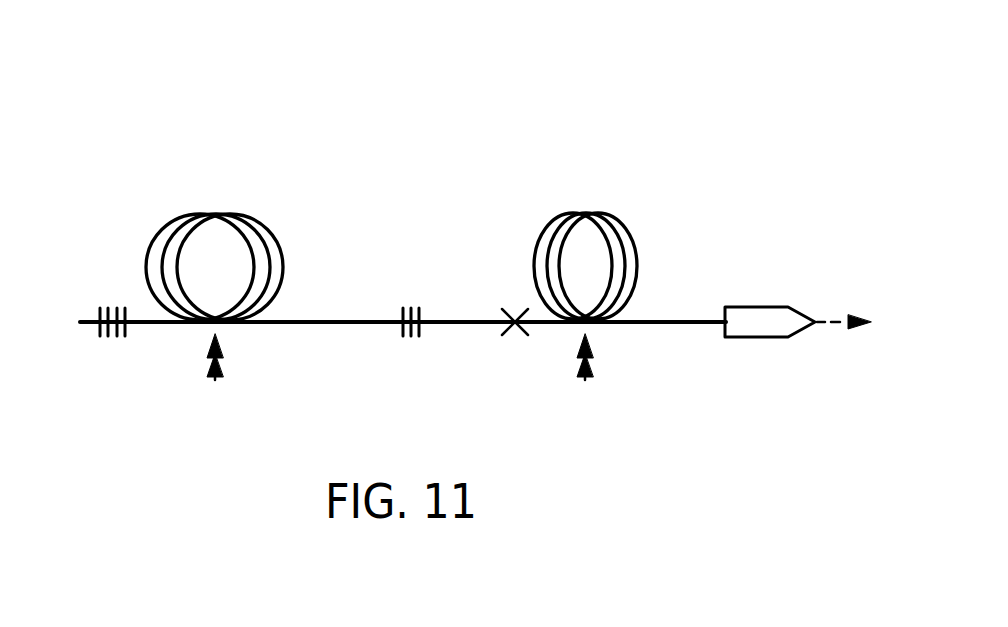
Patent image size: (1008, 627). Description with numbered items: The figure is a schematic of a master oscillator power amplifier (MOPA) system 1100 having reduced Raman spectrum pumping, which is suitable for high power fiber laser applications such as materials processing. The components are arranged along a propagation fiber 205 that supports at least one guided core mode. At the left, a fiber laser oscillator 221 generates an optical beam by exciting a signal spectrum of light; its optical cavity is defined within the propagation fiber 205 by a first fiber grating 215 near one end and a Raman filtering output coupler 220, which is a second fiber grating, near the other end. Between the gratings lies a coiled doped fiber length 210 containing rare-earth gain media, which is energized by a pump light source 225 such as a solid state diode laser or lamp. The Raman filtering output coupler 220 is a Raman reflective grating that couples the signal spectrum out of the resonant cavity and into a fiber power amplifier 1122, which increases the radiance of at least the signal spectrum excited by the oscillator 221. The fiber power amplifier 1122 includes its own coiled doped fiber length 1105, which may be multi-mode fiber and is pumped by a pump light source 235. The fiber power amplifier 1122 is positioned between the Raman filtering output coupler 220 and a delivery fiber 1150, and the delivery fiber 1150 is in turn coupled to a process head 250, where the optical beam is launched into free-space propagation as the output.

The master oscillator power amplifier (MOPA) system 1100 is at (142, 117).
The propagation fiber 205 is at (480, 318).
The first fiber grating 215 is at (138, 366).
The Raman filtering output coupler 220 is at (388, 366).
The fiber laser oscillator 221 is at (280, 202).
The doped fiber length 210 is at (285, 262).
The pump light source 225 is at (195, 452).
The fiber power amplifier 1122 is at (667, 202).
The doped fiber length 1105 is at (637, 268).
The pump light source 235 is at (566, 437).
The delivery fiber 1150 is at (680, 322).
The process head 250 is at (735, 334).